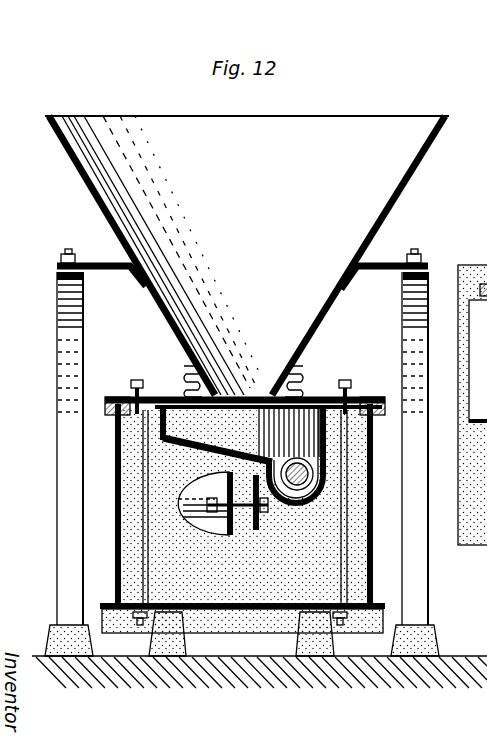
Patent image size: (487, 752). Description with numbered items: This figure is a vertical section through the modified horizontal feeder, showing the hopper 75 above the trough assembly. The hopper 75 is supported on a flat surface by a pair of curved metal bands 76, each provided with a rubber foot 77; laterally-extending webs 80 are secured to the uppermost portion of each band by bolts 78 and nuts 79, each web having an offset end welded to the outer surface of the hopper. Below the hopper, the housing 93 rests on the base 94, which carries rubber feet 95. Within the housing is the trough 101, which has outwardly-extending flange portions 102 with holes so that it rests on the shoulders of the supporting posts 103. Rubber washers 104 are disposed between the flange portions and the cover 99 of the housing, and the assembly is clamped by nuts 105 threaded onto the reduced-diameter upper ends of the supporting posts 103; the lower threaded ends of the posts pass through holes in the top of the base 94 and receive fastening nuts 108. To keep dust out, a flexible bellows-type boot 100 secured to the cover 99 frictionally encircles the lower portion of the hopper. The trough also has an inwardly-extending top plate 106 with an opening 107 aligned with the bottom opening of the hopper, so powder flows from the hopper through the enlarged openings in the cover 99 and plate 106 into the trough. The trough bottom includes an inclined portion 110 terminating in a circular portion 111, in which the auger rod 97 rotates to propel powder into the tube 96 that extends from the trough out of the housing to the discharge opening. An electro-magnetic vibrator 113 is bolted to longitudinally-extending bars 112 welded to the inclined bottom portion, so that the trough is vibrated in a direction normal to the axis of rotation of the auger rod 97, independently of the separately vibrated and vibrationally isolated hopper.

The hopper 75 is at (428, 170).
The curved metal bands 76 is at (62, 495).
The rubber foot 77 is at (47, 617).
The bolts 78 is at (55, 290).
The nuts 79 is at (60, 257).
The laterally-extending webs 80 is at (100, 263).
The housing 93 is at (326, 480).
The base 94 is at (367, 657).
The rubber feet 95 is at (187, 657).
The tube 96 is at (313, 482).
The auger rod 97 is at (303, 472).
The cover 99 is at (380, 398).
The flexible bellows-type boot 100 is at (305, 360).
The trough 101 is at (163, 437).
The flange portions 102 is at (112, 420).
The supporting posts 103 is at (140, 556).
The rubber washers 104 is at (128, 396).
The nuts 105 is at (152, 397).
The top plate 106 is at (188, 410).
The opening 107 is at (191, 501).
The fastening nuts 108 is at (138, 627).
The inclined portion 110 is at (232, 407).
The circular portion 111 is at (297, 499).
The longitudinally-extending bars 112 is at (228, 540).
The electro-magnetic vibrator 113 is at (190, 533).